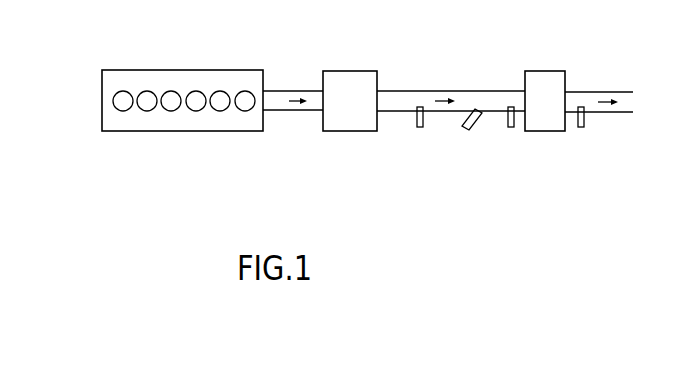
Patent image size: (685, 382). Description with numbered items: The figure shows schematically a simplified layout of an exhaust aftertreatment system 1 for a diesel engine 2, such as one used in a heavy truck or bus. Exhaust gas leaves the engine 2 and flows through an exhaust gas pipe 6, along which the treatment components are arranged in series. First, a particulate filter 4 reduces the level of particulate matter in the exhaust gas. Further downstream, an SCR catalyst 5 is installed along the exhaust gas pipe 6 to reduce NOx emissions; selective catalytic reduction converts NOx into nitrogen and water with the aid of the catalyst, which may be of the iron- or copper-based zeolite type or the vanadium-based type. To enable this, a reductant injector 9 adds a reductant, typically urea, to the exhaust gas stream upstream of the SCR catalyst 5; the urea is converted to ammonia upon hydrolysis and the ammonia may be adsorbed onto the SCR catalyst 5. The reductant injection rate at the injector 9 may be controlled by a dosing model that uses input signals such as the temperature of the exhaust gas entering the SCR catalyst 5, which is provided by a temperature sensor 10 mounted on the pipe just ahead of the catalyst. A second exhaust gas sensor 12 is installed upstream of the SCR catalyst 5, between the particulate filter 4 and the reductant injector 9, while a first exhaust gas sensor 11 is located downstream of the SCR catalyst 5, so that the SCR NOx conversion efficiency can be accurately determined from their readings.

The exhaust aftertreatment system 1 is at (552, 40).
The diesel engine 2 is at (162, 130).
The particulate filter 4 is at (350, 101).
The SCR catalyst 5 is at (545, 101).
The exhaust gas pipe 6 is at (302, 111).
The reductant injector 9 is at (468, 130).
The temperature sensor 10 is at (513, 127).
The first exhaust gas sensor 11 is at (587, 127).
The second exhaust gas sensor 12 is at (418, 127).